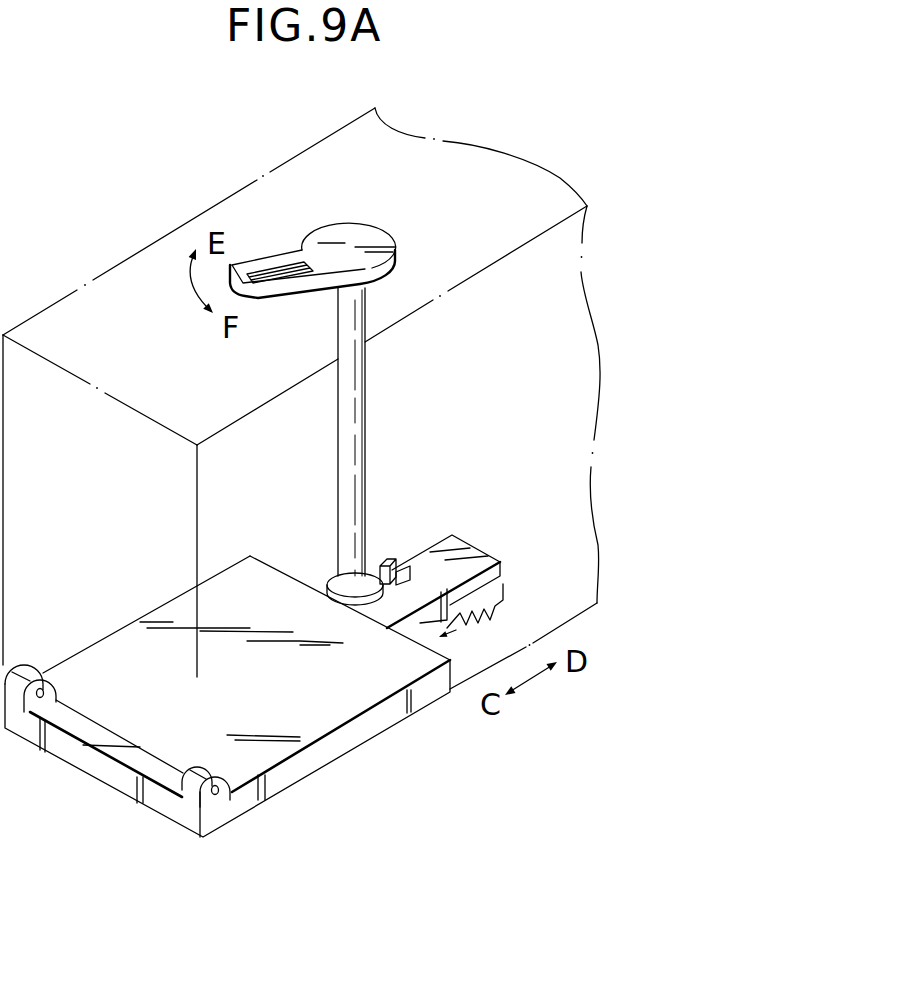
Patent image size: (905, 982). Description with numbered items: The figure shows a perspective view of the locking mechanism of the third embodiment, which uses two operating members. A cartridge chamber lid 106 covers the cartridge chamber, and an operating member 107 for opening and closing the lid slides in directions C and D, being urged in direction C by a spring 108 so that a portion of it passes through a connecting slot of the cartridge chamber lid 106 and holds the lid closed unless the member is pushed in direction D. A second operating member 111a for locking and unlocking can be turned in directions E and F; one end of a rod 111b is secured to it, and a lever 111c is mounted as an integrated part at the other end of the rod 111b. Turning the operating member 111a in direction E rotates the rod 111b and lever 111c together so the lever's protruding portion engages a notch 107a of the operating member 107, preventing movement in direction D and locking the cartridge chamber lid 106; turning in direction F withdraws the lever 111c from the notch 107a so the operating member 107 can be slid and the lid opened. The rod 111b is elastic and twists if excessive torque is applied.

The cartridge chamber lid 106 is at (338, 748).
The operating member 107 is at (482, 553).
The notch 107a is at (405, 566).
The spring 108 is at (503, 612).
The operating member 111a is at (378, 237).
The rod 111b is at (363, 408).
The lever 111c is at (383, 560).